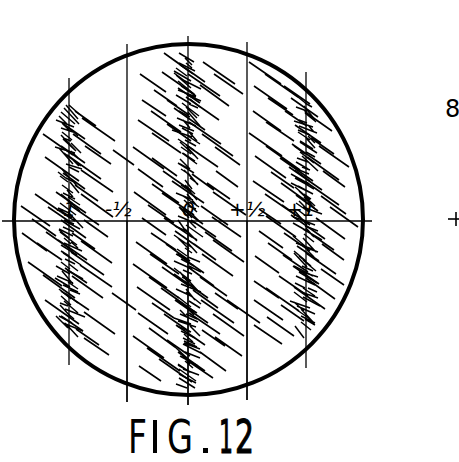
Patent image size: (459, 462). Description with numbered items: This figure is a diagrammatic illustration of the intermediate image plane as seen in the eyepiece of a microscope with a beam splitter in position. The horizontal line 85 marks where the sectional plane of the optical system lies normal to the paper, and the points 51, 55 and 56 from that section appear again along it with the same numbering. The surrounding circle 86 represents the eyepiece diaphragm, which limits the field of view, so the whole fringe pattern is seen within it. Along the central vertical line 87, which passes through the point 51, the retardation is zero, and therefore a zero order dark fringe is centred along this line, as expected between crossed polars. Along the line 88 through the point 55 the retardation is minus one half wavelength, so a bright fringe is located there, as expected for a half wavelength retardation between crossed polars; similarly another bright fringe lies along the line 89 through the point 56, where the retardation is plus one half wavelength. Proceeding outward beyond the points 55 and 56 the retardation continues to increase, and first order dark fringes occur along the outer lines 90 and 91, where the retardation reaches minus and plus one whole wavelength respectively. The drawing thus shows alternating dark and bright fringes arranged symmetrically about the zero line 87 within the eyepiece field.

The line 85 is at (204, 219).
The circle 86 is at (337, 126).
The line 87 is at (186, 210).
The line 88 is at (125, 213).
The line 89 is at (243, 210).
The line 90 is at (64, 211).
The line 91 is at (301, 209).
The point 51 is at (191, 313).
The point 55 is at (130, 311).
The point 56 is at (247, 310).